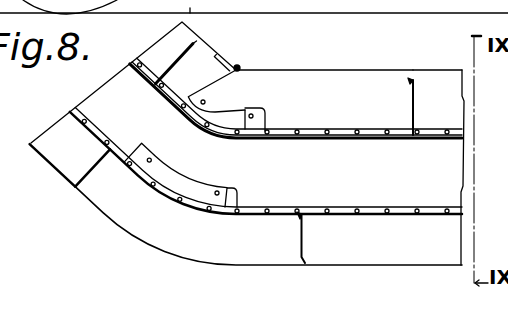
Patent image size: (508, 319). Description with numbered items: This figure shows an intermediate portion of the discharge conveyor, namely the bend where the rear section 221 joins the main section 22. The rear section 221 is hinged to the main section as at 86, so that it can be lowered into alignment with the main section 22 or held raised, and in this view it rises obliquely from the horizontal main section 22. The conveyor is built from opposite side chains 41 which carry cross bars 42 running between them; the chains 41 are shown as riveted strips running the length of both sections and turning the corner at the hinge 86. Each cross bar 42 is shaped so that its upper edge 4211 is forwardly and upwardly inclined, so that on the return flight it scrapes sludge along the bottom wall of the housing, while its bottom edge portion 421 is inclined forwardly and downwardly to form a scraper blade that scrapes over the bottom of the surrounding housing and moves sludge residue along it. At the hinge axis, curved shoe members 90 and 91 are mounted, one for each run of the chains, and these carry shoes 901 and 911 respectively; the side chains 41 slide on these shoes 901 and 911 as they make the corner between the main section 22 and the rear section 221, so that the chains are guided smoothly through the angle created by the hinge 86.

The discharge conveyor 22 is at (117, 227).
The rear section 221 is at (47, 166).
The side chains 41 is at (367, 128).
The cross bars 42 is at (415, 100).
The bottom edge portion 421 is at (413, 138).
The upper edge 4211 is at (411, 80).
The hinge 86 is at (238, 65).
The curved shoe member 90 is at (223, 110).
The shoe 901 is at (248, 108).
The curved shoe member 91 is at (193, 182).
The shoe 911 is at (233, 187).